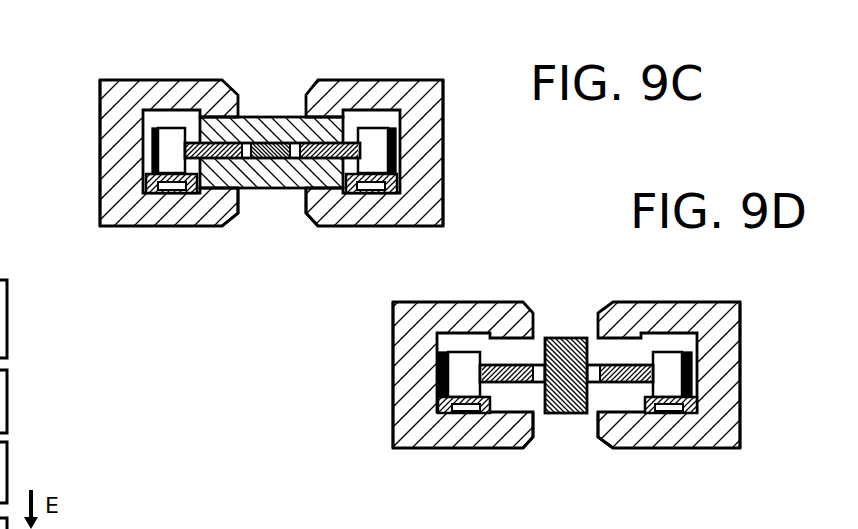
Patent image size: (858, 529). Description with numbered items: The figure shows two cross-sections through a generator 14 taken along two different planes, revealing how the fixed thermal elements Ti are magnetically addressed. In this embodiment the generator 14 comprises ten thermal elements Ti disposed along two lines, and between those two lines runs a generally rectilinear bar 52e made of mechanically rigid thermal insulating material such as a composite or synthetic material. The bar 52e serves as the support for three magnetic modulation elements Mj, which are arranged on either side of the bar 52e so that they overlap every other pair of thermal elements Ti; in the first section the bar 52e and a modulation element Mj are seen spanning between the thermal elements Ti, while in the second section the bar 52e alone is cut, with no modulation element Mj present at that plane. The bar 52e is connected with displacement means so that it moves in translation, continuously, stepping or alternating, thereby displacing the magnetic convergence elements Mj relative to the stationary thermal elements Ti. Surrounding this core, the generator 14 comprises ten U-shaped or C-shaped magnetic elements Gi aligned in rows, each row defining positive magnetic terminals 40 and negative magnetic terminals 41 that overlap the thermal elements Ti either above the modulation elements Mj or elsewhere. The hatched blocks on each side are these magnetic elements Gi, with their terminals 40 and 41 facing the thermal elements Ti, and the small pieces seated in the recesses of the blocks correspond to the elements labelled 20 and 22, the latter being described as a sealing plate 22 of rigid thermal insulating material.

In FIG. 9C, the generator 14 is at (446, 135).
In FIG. 9C, the terminal member 20 is at (274, 150).
In FIG. 9D, the terminal member 20 is at (440, 403).
In FIG. 9C, the sealing plate 22 is at (269, 183).
In FIG. 9D, the sealing plate 22 is at (480, 397).
In FIG. 9C, the positive magnetic terminals 40 is at (203, 80).
In FIG. 9D, the positive magnetic terminals 40 is at (620, 303).
In FIG. 9C, the negative magnetic terminals 41 is at (228, 211).
In FIG. 9D, the negative magnetic terminals 41 is at (515, 448).
In FIG. 9C, the bar 52e is at (262, 115).
In FIG. 9D, the bar 52e is at (565, 413).
In FIG. 9C, the magnetic elements Gi is at (112, 148).
In FIG. 9D, the magnetic elements Gi is at (415, 420).
In FIG. 9C, the thermal elements Ti is at (292, 188).
In FIG. 9D, the thermal elements Ti is at (622, 362).
In FIG. 9C, the magnetic modulation elements Mj is at (297, 192).